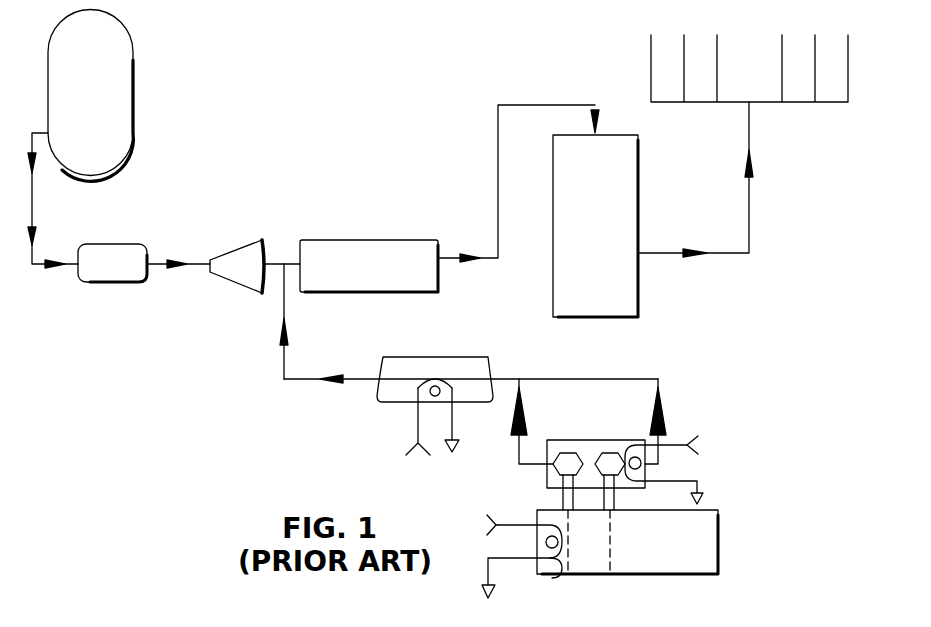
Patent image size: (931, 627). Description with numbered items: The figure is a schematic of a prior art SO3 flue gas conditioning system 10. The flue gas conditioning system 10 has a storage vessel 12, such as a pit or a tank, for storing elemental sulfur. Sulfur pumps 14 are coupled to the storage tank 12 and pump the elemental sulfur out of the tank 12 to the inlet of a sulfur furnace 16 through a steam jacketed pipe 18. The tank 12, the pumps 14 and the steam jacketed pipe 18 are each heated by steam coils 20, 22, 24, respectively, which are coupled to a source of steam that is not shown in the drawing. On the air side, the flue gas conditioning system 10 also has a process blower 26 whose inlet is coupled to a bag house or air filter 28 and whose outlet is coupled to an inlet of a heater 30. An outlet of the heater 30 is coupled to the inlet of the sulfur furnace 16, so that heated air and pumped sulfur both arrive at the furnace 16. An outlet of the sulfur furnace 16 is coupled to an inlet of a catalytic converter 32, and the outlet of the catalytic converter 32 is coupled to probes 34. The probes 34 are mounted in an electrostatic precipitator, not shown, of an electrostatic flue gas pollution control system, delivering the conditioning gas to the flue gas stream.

The flue gas conditioning system 10 is at (216, 393).
The storage vessel 12 is at (711, 510).
The sulfur pump 14 is at (620, 450).
The sulfur furnace 16 is at (383, 240).
The steam jacketed pipe 18 is at (467, 357).
The steam coil 20 is at (556, 578).
The steam coil 22 is at (624, 448).
The steam coil 24 is at (418, 388).
The process blower 26 is at (106, 283).
The bag house or air filter 28 is at (134, 117).
The heater 30 is at (245, 290).
The catalytic converter 32 is at (640, 228).
The probes 34 is at (766, 103).